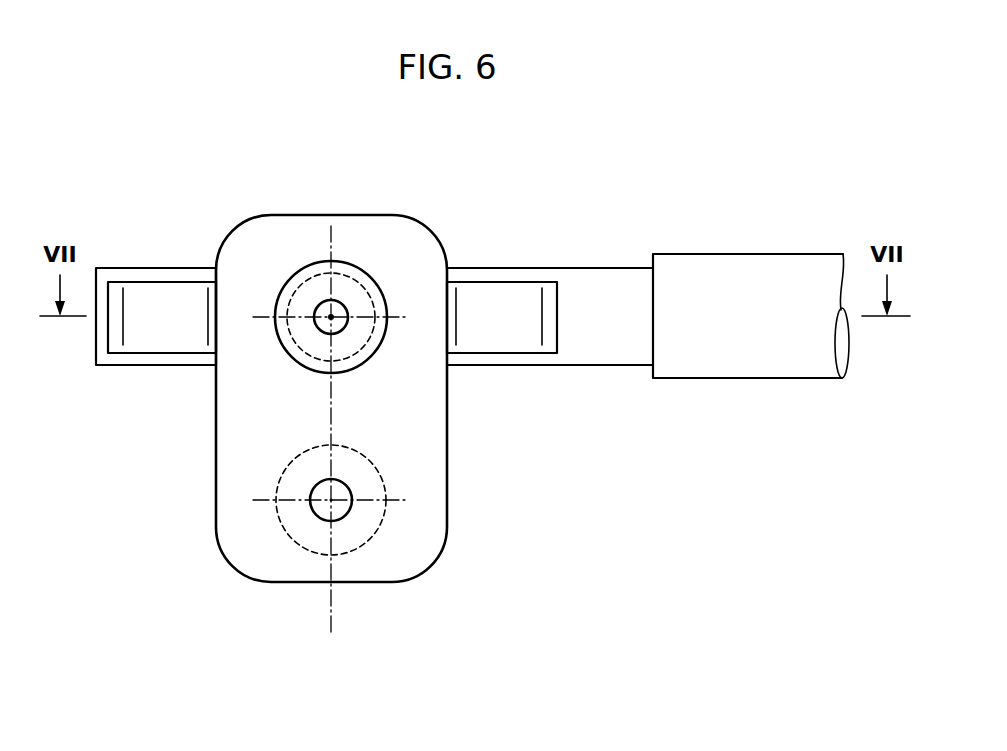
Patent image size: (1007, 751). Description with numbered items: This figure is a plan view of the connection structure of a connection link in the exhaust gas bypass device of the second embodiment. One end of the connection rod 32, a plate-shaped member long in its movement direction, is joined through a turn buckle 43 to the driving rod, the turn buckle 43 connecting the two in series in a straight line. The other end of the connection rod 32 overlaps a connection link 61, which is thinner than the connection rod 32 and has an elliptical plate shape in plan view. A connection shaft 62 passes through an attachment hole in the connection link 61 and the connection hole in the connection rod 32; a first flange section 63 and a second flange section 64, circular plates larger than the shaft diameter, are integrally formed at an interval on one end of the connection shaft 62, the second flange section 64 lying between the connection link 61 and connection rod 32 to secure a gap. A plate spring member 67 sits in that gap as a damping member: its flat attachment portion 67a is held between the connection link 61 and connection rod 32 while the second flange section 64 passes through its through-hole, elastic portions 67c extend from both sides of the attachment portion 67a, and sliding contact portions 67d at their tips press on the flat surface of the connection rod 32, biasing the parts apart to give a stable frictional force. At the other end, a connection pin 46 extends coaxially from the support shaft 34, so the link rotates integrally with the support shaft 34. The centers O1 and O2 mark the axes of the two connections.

The connection link 61 is at (243, 220).
The connection shaft 62 is at (364, 258).
The first flange section 63 is at (431, 374).
The second flange section 64 is at (371, 357).
The first axis center O1 is at (329, 316).
The support shaft 34 is at (281, 542).
The connection pin 46 is at (350, 512).
The second axis center O2 is at (329, 503).
The plate spring member 67 is at (469, 272).
The attachment portion 67a is at (212, 330).
The elastic portions 67c is at (152, 308).
The sliding contact portions 67d is at (115, 330).
The connection rod 32 is at (616, 258).
The turn buckle 43 is at (748, 365).